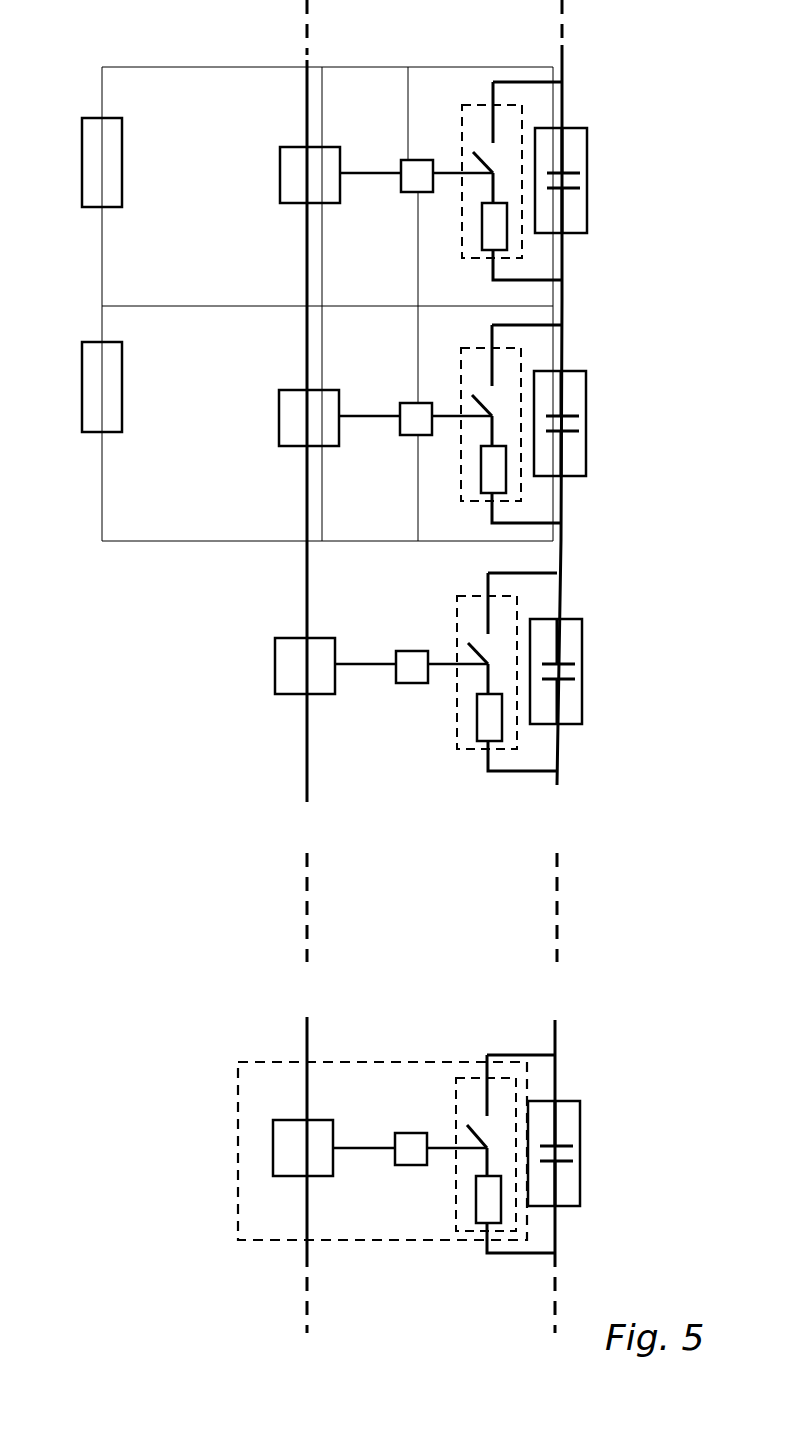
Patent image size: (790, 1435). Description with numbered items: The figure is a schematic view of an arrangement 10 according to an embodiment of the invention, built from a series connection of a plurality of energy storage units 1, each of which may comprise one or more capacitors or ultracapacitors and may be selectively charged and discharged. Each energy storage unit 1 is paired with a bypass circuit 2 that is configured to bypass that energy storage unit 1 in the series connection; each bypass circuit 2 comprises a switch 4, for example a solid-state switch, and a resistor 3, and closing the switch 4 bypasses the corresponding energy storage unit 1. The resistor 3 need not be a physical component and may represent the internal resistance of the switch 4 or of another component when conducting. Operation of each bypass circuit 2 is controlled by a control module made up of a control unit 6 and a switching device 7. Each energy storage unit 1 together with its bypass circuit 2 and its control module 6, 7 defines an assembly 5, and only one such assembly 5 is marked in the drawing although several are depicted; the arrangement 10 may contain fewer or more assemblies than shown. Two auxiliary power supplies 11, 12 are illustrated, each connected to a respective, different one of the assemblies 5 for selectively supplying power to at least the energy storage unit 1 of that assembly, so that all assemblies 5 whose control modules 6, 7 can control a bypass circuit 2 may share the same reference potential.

The energy storage unit 1 is at (587, 143).
The bypass circuit 2 is at (522, 120).
The resistor 3 is at (487, 252).
The switch 4 is at (474, 133).
The assembly 5 is at (258, 1242).
The control unit 6 is at (280, 185).
The switching device 7 is at (416, 160).
The arrangement 10 is at (158, 884).
The auxiliary power supply 11 is at (100, 117).
The auxiliary power supply 12 is at (100, 340).